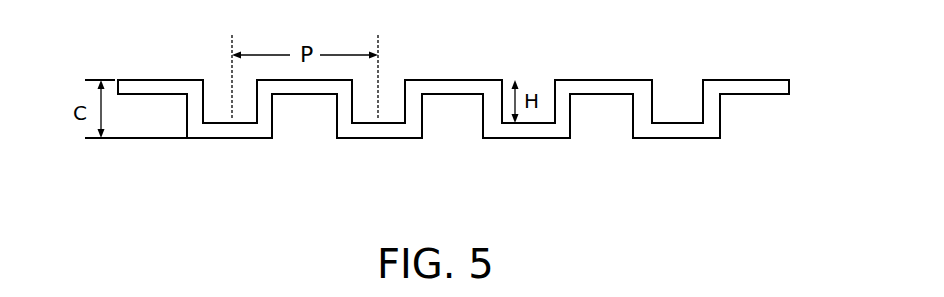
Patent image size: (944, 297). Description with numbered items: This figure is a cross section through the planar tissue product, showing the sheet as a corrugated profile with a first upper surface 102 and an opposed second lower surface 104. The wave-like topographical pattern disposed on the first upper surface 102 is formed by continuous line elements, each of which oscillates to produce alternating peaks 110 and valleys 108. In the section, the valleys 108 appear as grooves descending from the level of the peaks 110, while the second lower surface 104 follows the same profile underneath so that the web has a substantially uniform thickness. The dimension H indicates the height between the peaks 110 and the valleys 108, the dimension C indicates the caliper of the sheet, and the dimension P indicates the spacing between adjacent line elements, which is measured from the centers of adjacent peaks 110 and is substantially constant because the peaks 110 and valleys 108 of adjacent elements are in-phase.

The first upper surface 102 is at (146, 40).
The second lower surface 104 is at (532, 156).
The valleys 108 is at (670, 104).
The peaks 110 is at (756, 56).